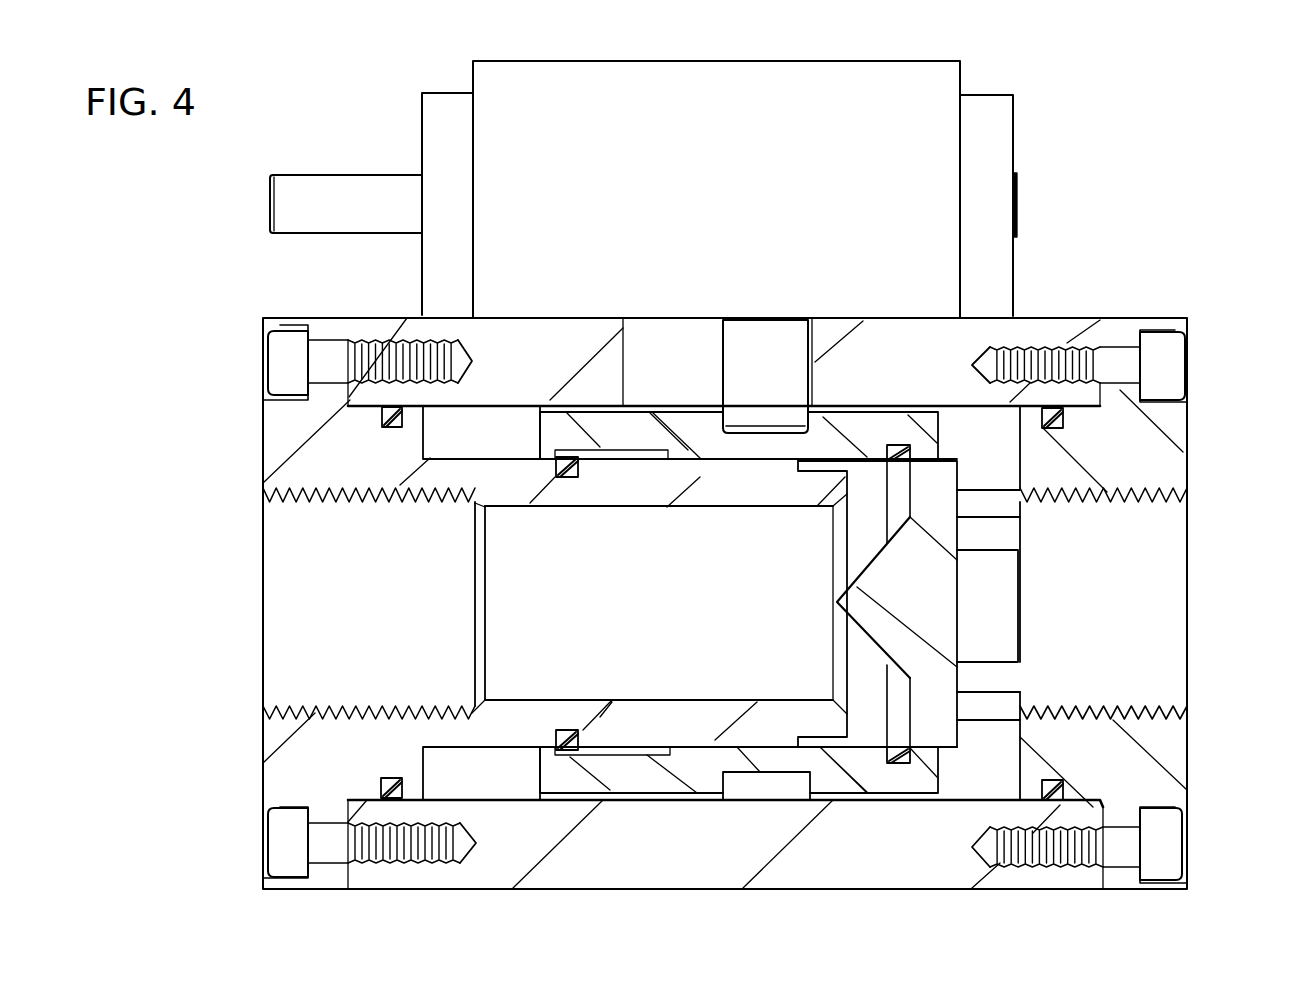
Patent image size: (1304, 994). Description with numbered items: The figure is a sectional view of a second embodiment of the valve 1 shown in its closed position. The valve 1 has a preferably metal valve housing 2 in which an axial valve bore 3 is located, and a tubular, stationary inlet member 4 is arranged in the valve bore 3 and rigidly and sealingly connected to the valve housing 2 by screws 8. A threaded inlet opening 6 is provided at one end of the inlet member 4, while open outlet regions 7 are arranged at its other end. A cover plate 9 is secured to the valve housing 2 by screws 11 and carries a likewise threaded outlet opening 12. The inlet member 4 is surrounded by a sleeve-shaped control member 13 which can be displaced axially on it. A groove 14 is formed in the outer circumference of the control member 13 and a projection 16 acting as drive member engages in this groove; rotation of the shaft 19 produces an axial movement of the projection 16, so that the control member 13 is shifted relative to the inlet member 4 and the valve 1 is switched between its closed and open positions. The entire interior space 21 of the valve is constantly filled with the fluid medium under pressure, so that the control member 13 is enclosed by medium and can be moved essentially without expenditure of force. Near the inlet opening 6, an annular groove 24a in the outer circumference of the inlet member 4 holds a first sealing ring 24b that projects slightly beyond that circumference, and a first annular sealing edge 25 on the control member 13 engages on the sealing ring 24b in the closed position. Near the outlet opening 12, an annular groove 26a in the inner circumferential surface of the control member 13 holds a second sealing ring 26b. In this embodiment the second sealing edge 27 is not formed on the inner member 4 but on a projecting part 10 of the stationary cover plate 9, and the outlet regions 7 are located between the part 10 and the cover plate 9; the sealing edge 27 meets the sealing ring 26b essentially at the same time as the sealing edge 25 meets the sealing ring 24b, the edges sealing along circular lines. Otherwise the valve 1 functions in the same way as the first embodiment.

The valve 1 is at (1044, 255).
The valve housing 2 is at (1067, 318).
The valve bore 3 is at (962, 792).
The inlet member 4 is at (640, 488).
The inlet opening 6 is at (298, 707).
The outlet regions 7 is at (980, 647).
The screws 8 is at (280, 372).
The cover plate 9 is at (1172, 425).
The projecting part 10 is at (877, 600).
The screws 11 is at (1158, 350).
The outlet opening 12 is at (1165, 707).
The control member 13 is at (650, 777).
The groove 14 is at (745, 420).
The projection 16 is at (732, 393).
The shaft 19 is at (303, 212).
The interior space 21 is at (752, 696).
The annular groove 24a is at (568, 457).
The first sealing ring 24b is at (578, 468).
The first annular sealing edge 25 is at (555, 456).
The annular groove 26a is at (908, 452).
The second sealing ring 26b is at (886, 447).
The second sealing edge 27 is at (907, 463).